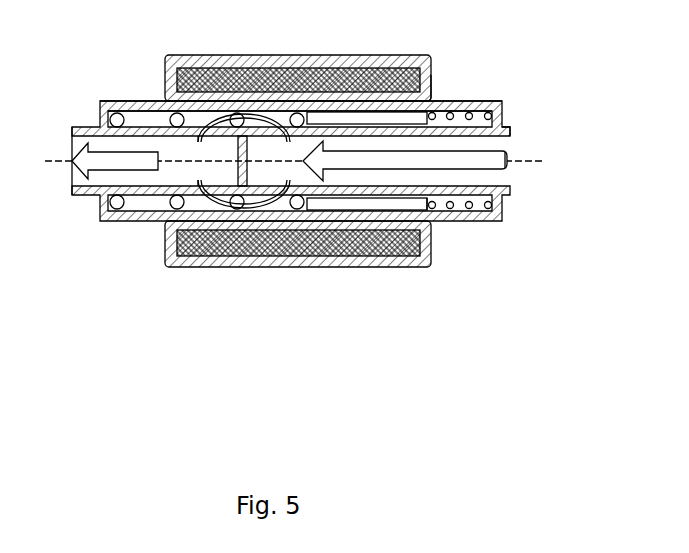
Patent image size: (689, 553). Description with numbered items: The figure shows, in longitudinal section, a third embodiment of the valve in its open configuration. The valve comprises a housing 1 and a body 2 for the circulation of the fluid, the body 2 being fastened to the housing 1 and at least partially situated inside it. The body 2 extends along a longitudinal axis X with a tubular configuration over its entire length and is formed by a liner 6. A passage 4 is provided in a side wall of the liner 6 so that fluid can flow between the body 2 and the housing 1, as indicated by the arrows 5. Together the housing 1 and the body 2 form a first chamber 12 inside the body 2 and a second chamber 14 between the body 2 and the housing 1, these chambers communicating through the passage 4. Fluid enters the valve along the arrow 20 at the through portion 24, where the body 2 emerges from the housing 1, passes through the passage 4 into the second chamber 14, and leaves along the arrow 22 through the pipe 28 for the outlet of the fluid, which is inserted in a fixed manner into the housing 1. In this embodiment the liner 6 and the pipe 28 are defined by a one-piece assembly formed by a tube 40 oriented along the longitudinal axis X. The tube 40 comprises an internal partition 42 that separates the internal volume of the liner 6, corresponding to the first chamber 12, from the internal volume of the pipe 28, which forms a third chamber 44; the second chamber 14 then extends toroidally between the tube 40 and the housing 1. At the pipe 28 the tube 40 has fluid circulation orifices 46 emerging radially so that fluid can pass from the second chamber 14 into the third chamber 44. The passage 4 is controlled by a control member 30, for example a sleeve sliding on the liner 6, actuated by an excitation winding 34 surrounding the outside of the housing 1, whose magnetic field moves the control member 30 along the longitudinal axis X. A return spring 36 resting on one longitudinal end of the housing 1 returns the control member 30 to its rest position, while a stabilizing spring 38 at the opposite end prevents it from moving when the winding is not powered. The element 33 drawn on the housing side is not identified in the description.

The housing 1 is at (144, 224).
The body 2 is at (460, 222).
The passage 4 is at (266, 141).
The arrows 5 is at (212, 138).
The liner 6 is at (458, 208).
The first chamber 12 is at (405, 157).
The second chamber 14 is at (207, 161).
The arrow 20 is at (509, 165).
The arrow 22 is at (168, 165).
The through portion 24 is at (506, 121).
The pipe 28 is at (84, 189).
The control member 30 is at (367, 66).
The coil housing wall 33 is at (433, 70).
The excitation winding 34 is at (303, 56).
The return spring 36 is at (118, 101).
The stabilizing spring 38 is at (471, 101).
The tube 40 is at (147, 118).
The internal partition 42 is at (261, 263).
The third chamber 44 is at (128, 152).
The fluid circulation orifices 46 is at (197, 142).
The longitudinal axis X is at (47, 157).